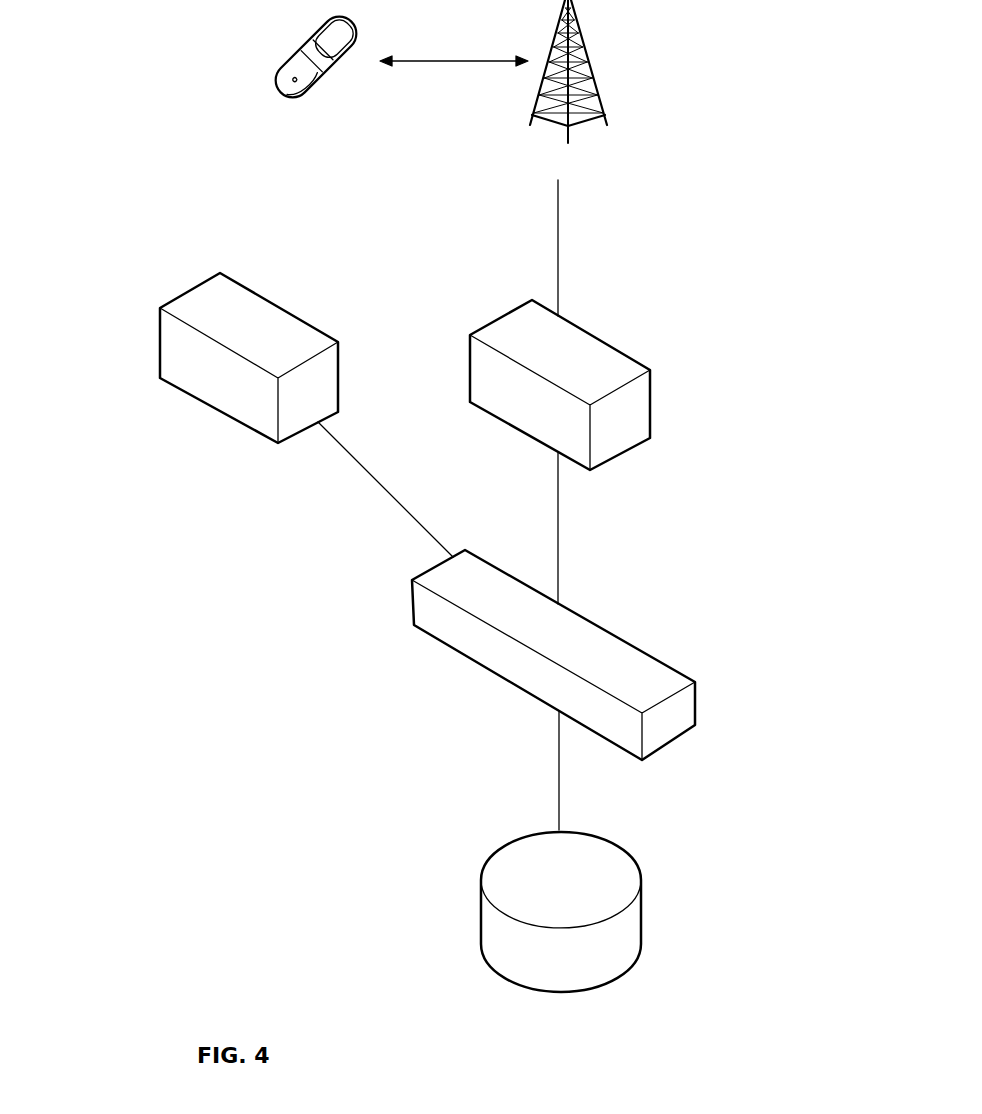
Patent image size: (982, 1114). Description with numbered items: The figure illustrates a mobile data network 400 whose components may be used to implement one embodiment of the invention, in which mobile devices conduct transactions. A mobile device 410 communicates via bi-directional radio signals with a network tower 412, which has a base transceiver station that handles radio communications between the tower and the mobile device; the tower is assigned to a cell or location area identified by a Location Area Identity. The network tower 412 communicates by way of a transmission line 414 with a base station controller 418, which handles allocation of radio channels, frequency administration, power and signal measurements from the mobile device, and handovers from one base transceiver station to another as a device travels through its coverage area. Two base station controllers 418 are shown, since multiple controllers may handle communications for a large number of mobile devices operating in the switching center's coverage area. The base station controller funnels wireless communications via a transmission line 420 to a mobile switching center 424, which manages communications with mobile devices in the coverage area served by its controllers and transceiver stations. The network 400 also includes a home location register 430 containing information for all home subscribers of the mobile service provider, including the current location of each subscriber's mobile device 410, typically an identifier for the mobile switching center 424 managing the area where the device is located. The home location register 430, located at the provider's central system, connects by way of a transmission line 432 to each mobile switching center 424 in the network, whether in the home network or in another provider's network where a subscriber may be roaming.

The mobile data network 400 is at (200, 706).
The mobile device 410 is at (308, 36).
The network tower 412 is at (584, 57).
The transmission line 414 is at (558, 227).
The base station controller 418 is at (272, 303).
The transmission line 420 is at (558, 533).
The mobile switching center 424 is at (640, 650).
The home location register 430 is at (641, 917).
The transmission line 432 is at (559, 773).